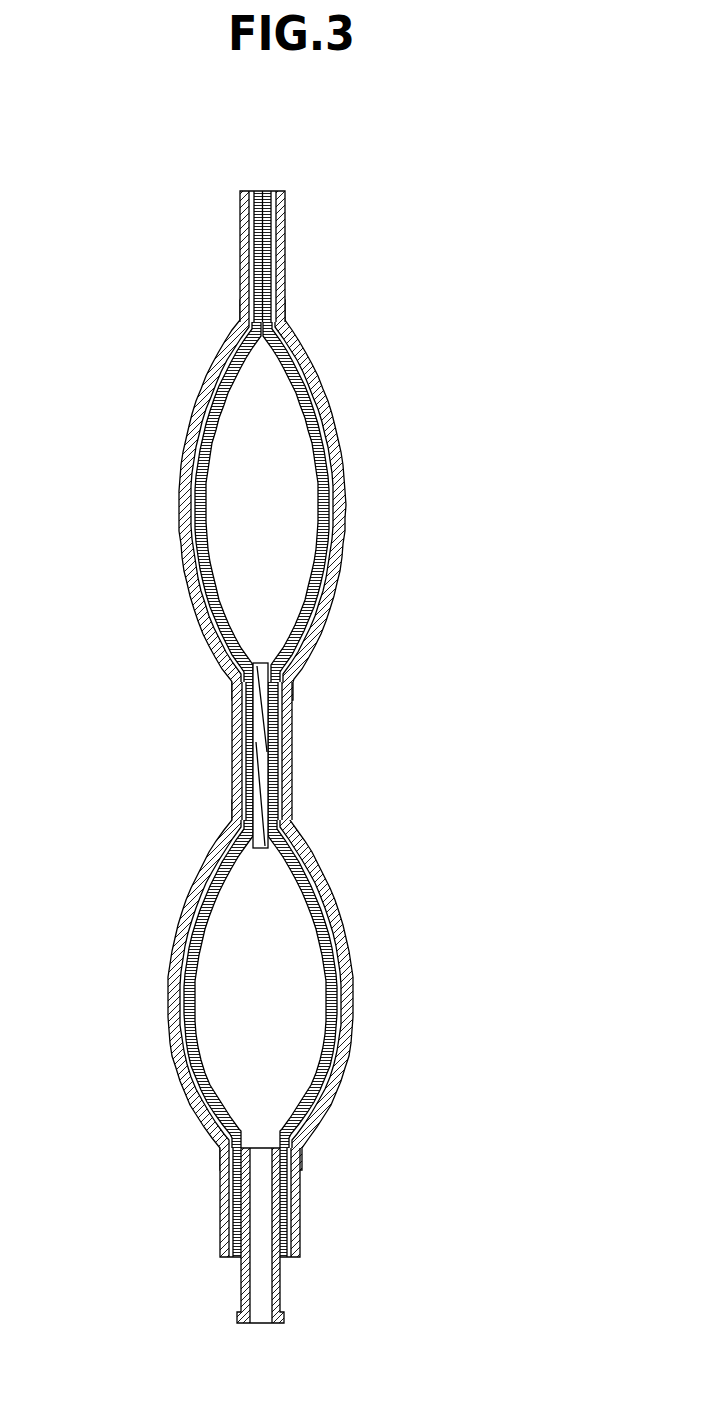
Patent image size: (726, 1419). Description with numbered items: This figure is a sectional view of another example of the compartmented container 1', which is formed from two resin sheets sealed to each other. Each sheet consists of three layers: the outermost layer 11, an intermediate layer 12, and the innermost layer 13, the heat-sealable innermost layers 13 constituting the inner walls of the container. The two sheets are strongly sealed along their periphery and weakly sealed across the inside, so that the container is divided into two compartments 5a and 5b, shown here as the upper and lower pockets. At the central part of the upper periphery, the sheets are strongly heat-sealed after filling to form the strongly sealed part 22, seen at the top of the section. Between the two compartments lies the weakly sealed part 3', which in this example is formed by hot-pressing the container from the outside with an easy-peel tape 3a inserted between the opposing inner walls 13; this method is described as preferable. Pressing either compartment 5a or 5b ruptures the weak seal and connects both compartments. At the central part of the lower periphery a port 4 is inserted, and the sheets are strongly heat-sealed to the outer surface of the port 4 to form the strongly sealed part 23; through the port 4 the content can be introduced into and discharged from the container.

The compartmented container 1' is at (296, 737).
The strongly sealed part 22 is at (262, 194).
The outermost layer 11 is at (322, 390).
The intermediate layer 12 is at (334, 468).
The innermost layer 13 is at (332, 533).
The compartment 5a is at (260, 487).
The compartment 5b is at (262, 990).
The easy-peel tape 3a is at (256, 776).
The weakly sealed part 3' is at (322, 755).
The strongly sealed part 23 is at (282, 1200).
The port 4 is at (247, 1272).